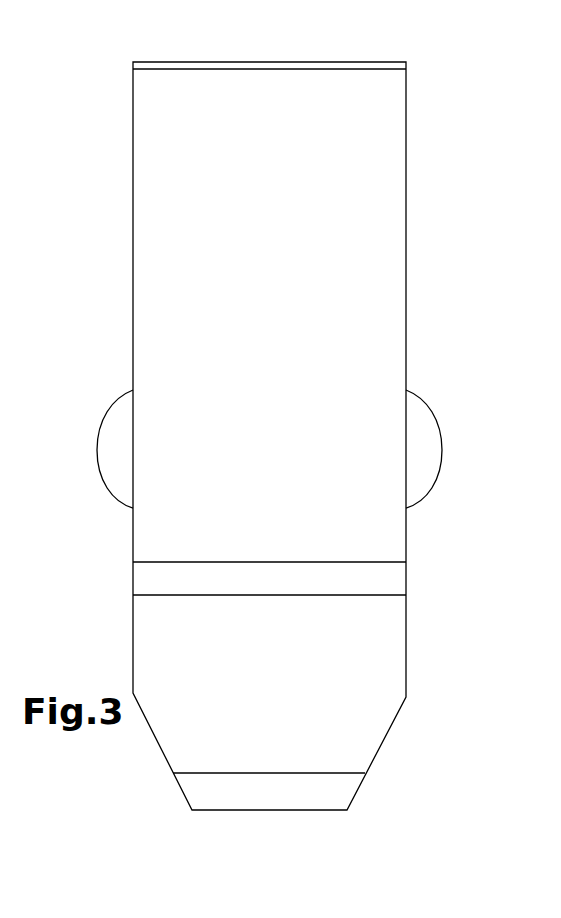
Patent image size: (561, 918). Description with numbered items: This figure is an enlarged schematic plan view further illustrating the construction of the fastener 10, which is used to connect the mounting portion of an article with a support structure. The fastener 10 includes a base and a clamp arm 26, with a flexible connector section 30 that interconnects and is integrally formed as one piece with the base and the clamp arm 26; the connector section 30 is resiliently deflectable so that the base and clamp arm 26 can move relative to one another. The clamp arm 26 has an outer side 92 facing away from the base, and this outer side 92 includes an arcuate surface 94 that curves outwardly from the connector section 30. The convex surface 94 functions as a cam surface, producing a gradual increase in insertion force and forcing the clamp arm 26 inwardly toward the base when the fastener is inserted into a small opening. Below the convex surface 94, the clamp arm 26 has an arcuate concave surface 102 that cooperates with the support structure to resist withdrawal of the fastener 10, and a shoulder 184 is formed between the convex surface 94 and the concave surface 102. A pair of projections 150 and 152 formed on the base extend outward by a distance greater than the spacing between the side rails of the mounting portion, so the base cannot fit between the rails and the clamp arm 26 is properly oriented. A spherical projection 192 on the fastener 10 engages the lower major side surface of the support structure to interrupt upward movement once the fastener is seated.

The fastener 10 is at (492, 173).
The connector section 30 is at (195, 62).
The outer side 92 is at (377, 232).
The clamp arm 26 is at (400, 258).
The arcuate surface 94 is at (347, 303).
The projection 150 is at (115, 443).
The projection 152 is at (423, 452).
The shoulder 184 is at (368, 579).
The concave surface 102 is at (350, 680).
The spherical projection 192 is at (320, 790).